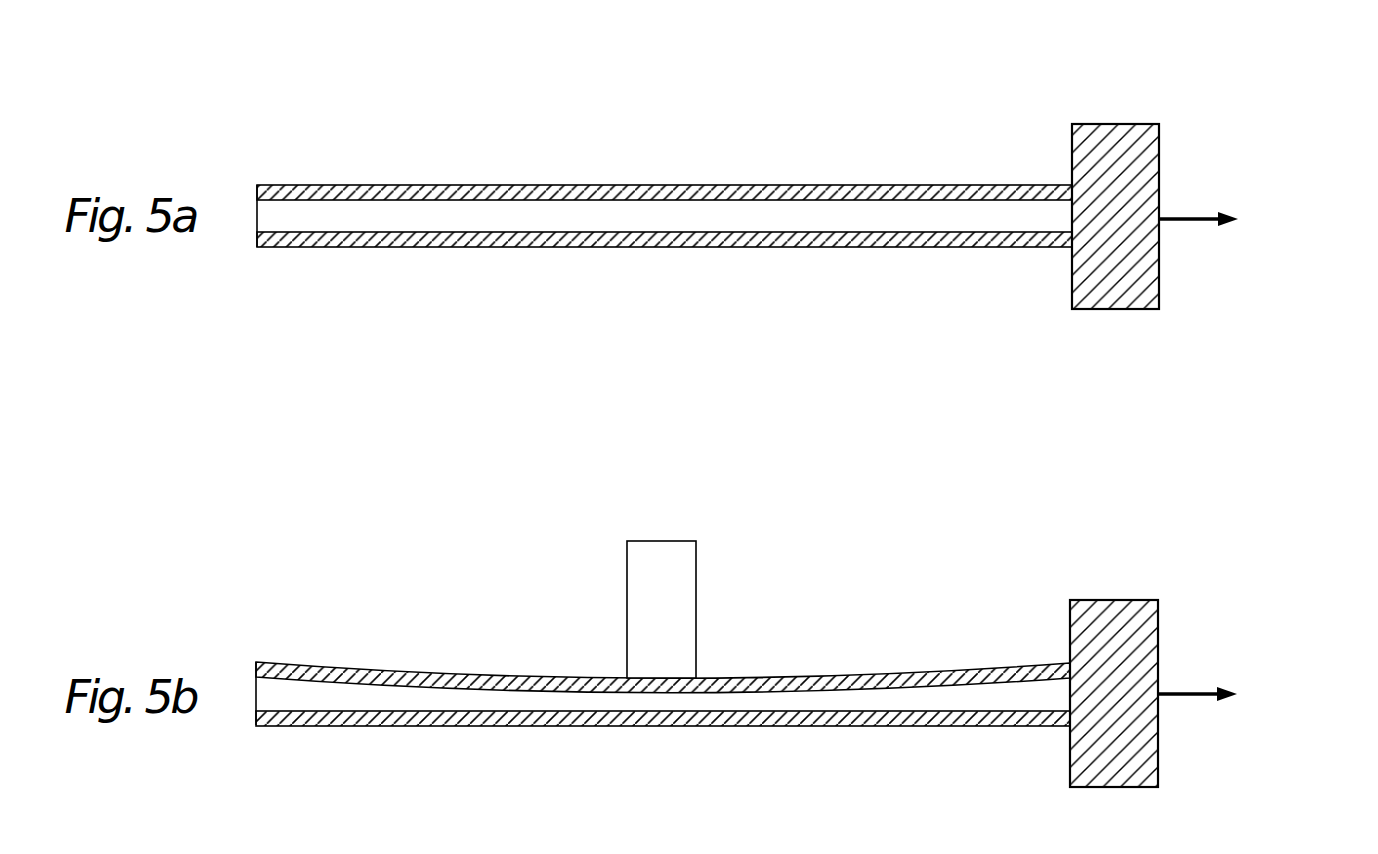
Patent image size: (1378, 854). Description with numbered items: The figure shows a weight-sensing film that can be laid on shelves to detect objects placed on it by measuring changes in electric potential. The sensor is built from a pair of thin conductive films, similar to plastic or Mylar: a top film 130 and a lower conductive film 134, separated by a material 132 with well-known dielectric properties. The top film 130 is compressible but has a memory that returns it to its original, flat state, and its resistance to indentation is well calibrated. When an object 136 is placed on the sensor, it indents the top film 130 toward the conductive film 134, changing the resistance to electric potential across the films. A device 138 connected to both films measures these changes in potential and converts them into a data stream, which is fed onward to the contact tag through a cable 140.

In FIG. 5A, the top conductive film 130 is at (630, 183).
In FIG. 5B, the top conductive film 130 is at (1008, 662).
In FIG. 5A, the material with well-known dielectric properties 132 is at (482, 217).
In FIG. 5B, the material with well-known dielectric properties 132 is at (318, 698).
In FIG. 5A, the conductive film 134 is at (684, 251).
In FIG. 5B, the conductive film 134 is at (883, 708).
In FIG. 5B, the object 136 is at (648, 540).
In FIG. 5A, the device 138 is at (1103, 280).
In FIG. 5B, the device 138 is at (1105, 625).
In FIG. 5A, the cable 140 is at (1198, 215).
In FIG. 5B, the cable 140 is at (1198, 690).